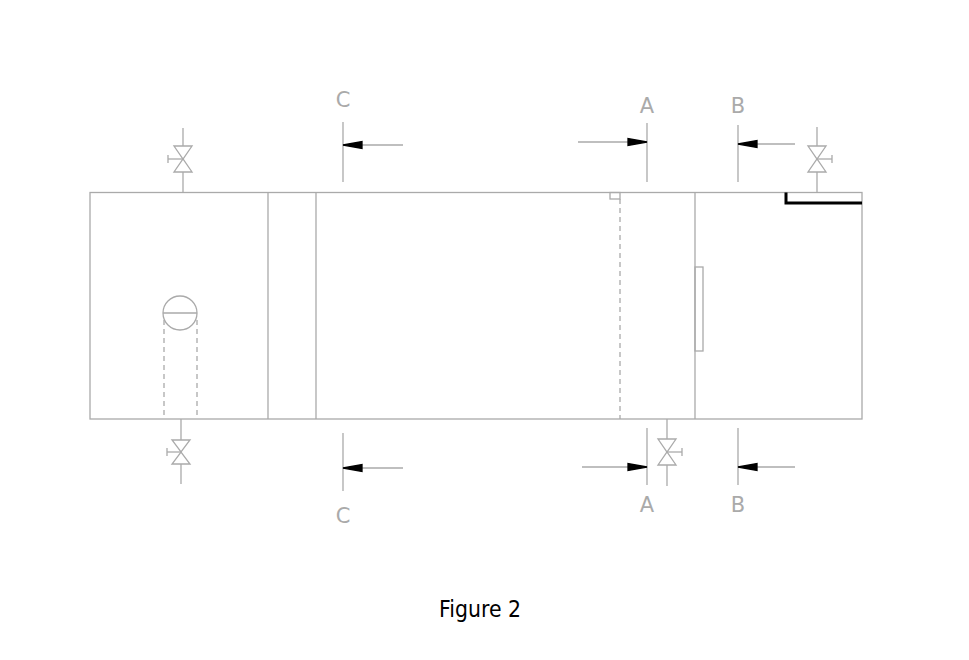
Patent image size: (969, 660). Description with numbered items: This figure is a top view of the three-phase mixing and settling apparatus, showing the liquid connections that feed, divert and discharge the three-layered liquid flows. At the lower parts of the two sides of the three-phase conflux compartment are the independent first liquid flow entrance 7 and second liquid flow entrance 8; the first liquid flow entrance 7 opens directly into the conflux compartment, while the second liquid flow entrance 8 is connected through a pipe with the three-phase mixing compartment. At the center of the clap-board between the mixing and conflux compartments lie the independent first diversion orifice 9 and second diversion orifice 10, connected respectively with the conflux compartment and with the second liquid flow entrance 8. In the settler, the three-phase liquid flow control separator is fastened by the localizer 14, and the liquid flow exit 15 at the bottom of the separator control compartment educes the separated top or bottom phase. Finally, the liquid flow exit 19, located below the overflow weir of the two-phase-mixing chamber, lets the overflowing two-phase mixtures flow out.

The first liquid flow entrance 7 is at (140, 132).
The second liquid flow entrance 8 is at (136, 458).
The first diversion orifice 9 is at (116, 269).
The second diversion orifice 10 is at (115, 368).
The localizer 14 is at (561, 253).
The liquid flow exit 15 is at (722, 478).
The liquid flow exit 19 is at (845, 132).